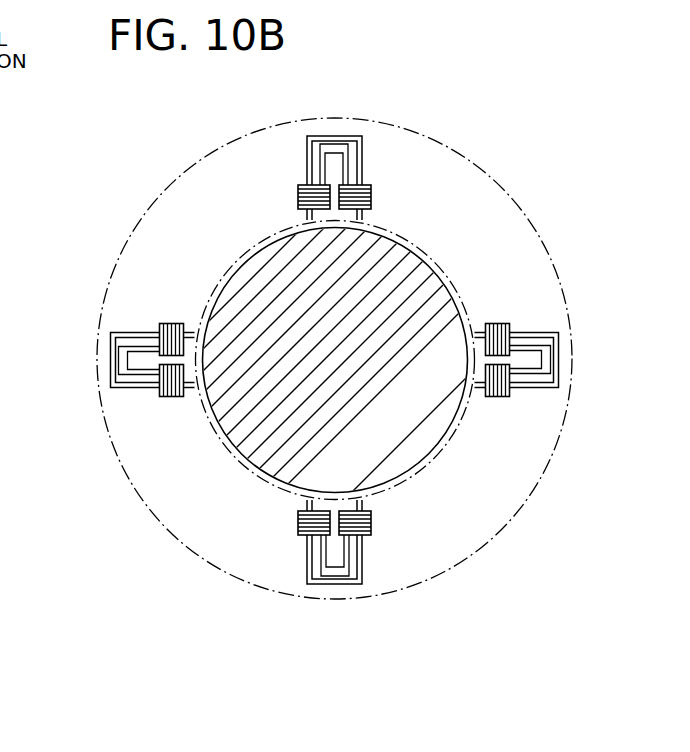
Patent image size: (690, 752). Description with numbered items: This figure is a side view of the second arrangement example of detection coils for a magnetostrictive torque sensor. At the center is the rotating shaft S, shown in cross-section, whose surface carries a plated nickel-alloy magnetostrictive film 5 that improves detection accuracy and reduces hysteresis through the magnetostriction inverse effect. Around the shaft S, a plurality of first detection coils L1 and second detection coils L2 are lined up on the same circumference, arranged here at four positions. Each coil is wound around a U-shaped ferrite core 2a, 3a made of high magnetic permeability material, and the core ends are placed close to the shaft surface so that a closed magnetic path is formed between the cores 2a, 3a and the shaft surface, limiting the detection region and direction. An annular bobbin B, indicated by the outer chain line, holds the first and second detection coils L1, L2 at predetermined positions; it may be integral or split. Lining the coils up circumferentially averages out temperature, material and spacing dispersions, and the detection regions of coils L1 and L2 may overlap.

The U-shaped ferrite core 2a is at (362, 165).
The U-shaped ferrite core 3a is at (328, 142).
The first detection coil L1 is at (372, 195).
The second detection coil L2 is at (298, 195).
The rotating shaft S is at (345, 376).
The magnetostrictive film 5 is at (430, 257).
The annular bobbin B is at (132, 516).